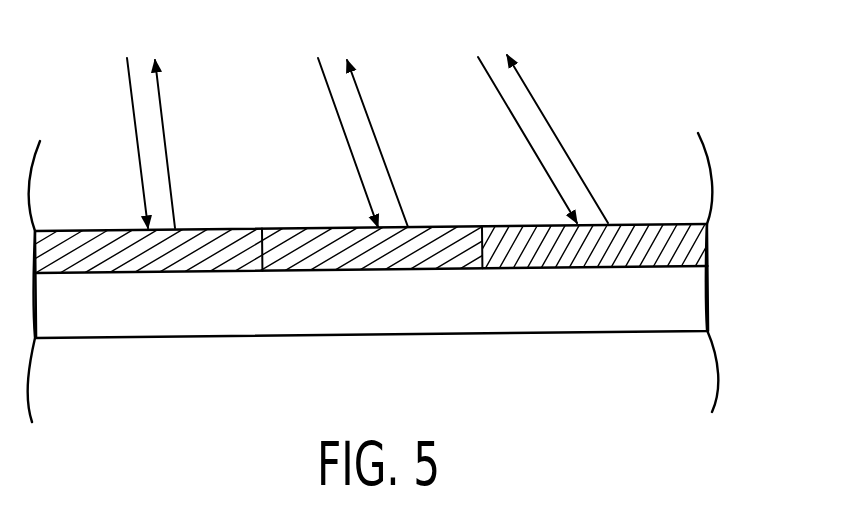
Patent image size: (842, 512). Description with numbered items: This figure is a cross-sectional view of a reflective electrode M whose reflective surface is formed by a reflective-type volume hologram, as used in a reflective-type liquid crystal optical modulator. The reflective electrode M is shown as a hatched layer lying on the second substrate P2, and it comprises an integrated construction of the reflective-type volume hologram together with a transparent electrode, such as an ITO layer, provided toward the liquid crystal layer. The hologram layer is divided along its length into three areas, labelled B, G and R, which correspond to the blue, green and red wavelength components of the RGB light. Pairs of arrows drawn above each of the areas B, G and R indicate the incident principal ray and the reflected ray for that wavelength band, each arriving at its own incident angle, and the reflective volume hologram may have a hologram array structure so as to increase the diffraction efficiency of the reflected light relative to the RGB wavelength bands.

The reflective electrode M is at (690, 246).
The second substrate P2 is at (693, 303).
The blue wavelength area B is at (145, 302).
The green wavelength area G is at (372, 299).
The red wavelength area R is at (595, 295).